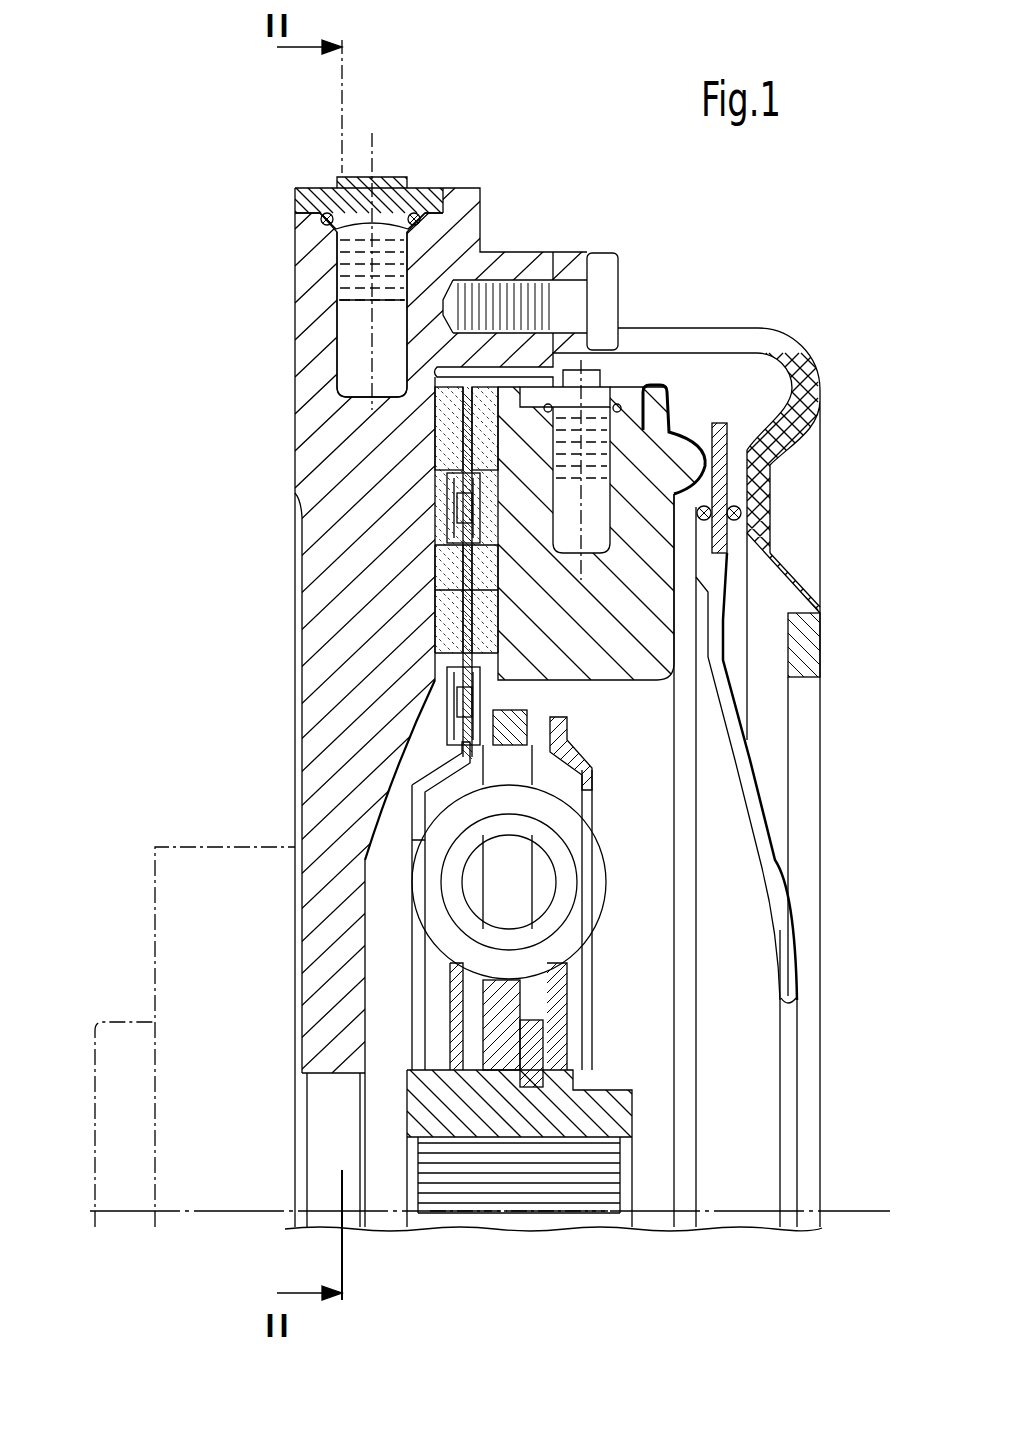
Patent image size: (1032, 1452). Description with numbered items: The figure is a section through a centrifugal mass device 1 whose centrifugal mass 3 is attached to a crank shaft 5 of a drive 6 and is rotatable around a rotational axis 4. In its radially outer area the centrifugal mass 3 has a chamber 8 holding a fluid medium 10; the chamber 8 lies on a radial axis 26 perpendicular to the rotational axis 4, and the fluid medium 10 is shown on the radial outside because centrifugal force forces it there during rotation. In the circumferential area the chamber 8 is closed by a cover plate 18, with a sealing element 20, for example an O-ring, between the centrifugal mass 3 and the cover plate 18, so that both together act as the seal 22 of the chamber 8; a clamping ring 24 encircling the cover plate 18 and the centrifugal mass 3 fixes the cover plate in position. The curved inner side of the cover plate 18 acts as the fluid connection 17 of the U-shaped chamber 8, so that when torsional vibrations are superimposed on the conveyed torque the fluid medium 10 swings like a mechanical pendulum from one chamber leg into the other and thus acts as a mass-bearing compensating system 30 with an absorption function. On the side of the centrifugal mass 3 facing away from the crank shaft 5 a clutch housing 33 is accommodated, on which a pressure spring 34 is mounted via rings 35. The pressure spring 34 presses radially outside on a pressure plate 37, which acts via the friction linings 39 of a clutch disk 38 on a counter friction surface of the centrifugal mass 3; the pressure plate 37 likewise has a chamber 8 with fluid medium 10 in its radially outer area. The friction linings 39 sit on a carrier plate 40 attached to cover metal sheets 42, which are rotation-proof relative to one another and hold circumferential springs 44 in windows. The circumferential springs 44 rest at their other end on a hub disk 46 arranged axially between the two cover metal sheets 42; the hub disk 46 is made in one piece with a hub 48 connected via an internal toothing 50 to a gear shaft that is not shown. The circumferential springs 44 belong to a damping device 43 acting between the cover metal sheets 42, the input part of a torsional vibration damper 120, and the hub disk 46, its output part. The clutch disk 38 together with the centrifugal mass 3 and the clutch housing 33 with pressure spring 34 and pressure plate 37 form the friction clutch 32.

The centrifugal mass device 1 is at (292, 440).
The centrifugal mass 3 is at (318, 623).
The rotational axis 4 is at (515, 1215).
The crank shaft 5 is at (195, 850).
The drive 6 is at (118, 1020).
The chamber 8 is at (462, 290).
The fluid medium 10 is at (345, 250).
The fluid connection 17 is at (400, 214).
The cover plate 18 is at (337, 188).
The sealing element 20 is at (320, 221).
The seal 22 is at (295, 190).
The clamping ring 24 is at (385, 188).
The radial axis 26 is at (372, 133).
The mass-bearing compensating system 30 is at (340, 340).
The friction clutch 32 is at (790, 330).
The clutch housing 33 is at (810, 636).
The pressure spring 34 is at (727, 440).
The rings 35 is at (745, 520).
The pressure plate 37 is at (650, 678).
The clutch disk 38 is at (575, 968).
The friction linings 39 is at (460, 590).
The carrier plate 40 is at (460, 655).
The cover metal sheets 42 is at (440, 750).
The damping device 43 is at (613, 853).
The circumferential springs 44 is at (478, 880).
The hub disk 46 is at (545, 1020).
The hub 48 is at (630, 1100).
The internal toothing 50 is at (625, 1150).
The torsional vibration damper 120 is at (607, 830).